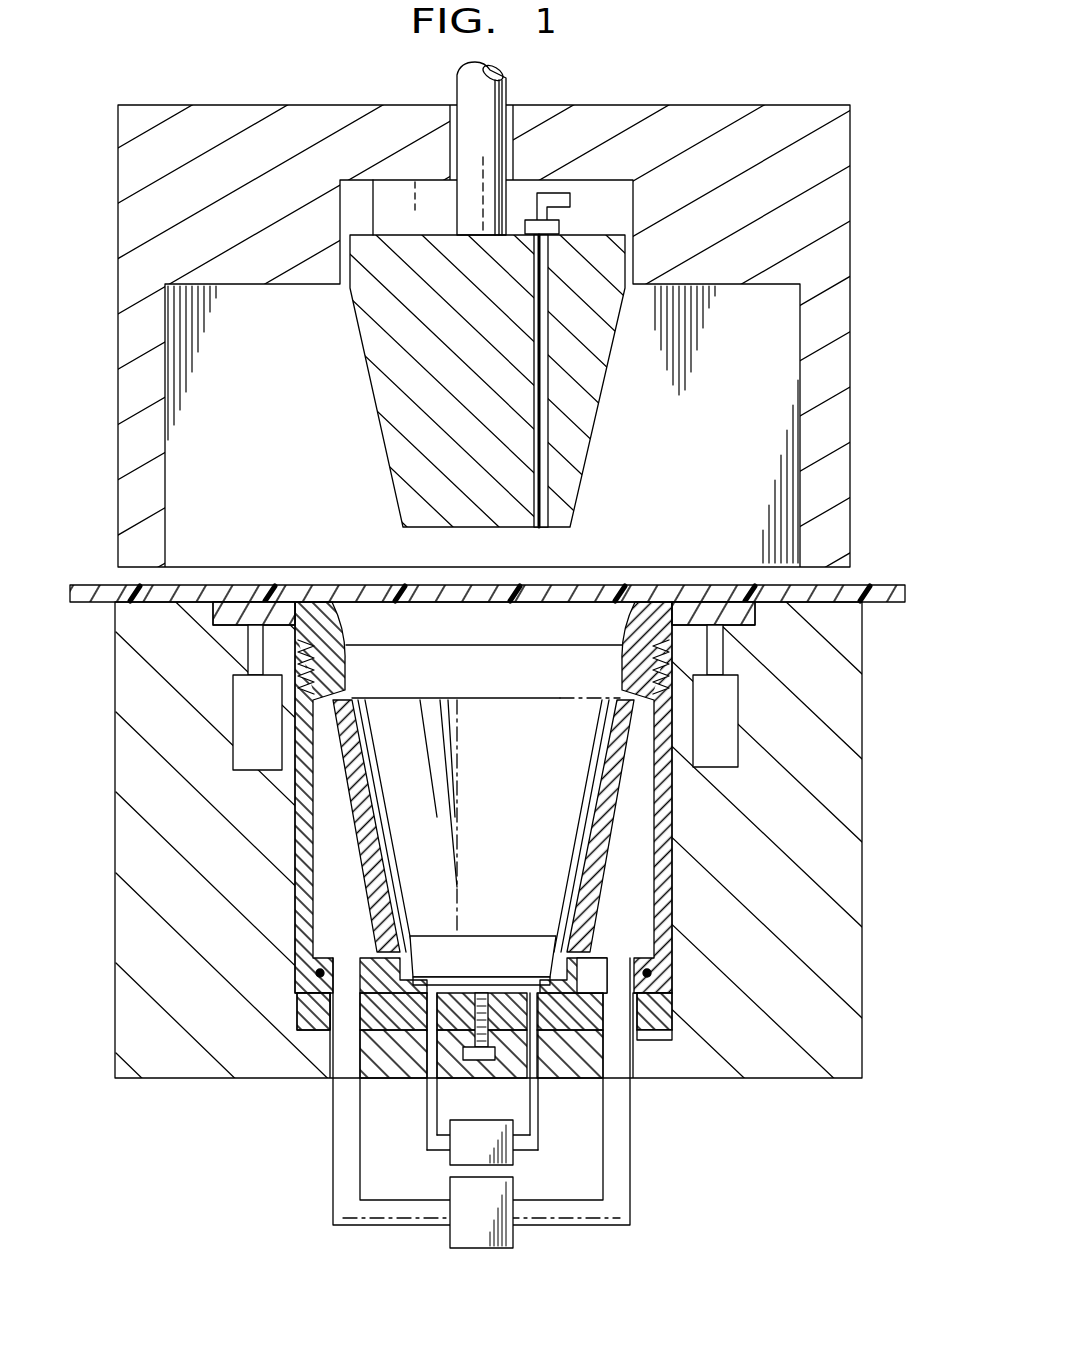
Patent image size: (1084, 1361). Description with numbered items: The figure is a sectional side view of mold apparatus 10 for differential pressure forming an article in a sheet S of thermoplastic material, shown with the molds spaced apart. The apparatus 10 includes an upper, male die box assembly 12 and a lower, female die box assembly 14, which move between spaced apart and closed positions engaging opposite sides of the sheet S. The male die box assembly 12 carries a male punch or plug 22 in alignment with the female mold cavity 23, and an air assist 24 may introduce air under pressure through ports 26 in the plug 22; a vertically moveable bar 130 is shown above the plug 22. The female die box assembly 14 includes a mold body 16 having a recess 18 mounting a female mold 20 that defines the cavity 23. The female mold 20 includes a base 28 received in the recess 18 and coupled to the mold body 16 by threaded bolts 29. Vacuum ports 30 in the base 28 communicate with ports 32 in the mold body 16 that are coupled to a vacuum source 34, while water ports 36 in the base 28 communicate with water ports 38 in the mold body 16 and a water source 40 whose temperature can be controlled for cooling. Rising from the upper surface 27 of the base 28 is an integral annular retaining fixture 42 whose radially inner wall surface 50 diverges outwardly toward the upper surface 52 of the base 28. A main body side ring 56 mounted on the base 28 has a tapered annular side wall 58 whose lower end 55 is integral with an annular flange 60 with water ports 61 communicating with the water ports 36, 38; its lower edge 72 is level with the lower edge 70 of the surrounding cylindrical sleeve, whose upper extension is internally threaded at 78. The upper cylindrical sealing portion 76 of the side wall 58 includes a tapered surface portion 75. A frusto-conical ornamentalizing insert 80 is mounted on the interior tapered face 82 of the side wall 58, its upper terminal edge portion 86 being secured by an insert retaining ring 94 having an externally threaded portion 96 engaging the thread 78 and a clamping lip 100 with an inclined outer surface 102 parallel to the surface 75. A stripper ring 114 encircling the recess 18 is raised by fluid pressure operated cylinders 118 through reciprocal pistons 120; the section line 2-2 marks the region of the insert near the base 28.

The apparatus 10 is at (165, 1105).
The upper male die box assembly 12 is at (248, 266).
The lower female die box assembly 14 is at (866, 644).
The mold body 16 is at (858, 810).
The recess 18 is at (312, 875).
The female mold 20 is at (680, 803).
The male punch or plug 22 is at (383, 433).
The female mold cavity 23 is at (410, 820).
The air assist 24 is at (560, 195).
The ports 26 is at (542, 442).
The upper surface of the base 27 is at (315, 974).
The base 28 is at (312, 1015).
The threaded bolts 29 is at (474, 1061).
The vacuum ports 30 is at (428, 1040).
The ports 32 is at (533, 1062).
The vacuum source 34 is at (513, 1158).
The water ports 36 is at (345, 1065).
The water ports 38 is at (343, 1087).
The water source 40 is at (513, 1232).
The annular retaining fixture 42 is at (414, 932).
The radially inner wall surface 50 is at (498, 936).
The upper surface of the base 52 is at (453, 977).
The lower end of side wall 55 is at (630, 982).
The main body side ring 56 is at (615, 925).
The tapered annular side wall 58 is at (622, 832).
The annular flange 60 is at (622, 962).
The water ports 61 is at (350, 965).
The lower edge of cylindrical sleeve 70 is at (650, 1000).
The lower edge of main body side ring 72 is at (650, 1030).
The tapered surface portion 75 is at (628, 712).
The upper cylindrical sealing portion 76 is at (678, 665).
The internal thread 78 is at (338, 648).
The ornamentalizing insert 80 is at (352, 772).
The interior tapered face 82 is at (592, 806).
The upper terminal edge portion of insert 86 is at (358, 704).
The insert retaining ring 94 is at (324, 601).
The externally threaded portion 96 is at (664, 658).
The insert retaining clamping lip 100 is at (628, 622).
The inclined outer surface 102 is at (622, 700).
The stripper ring 114 is at (240, 601).
The fluid pressure operated cylinders 118 is at (233, 735).
The reciprocal pistons 120 is at (248, 652).
The vertically moveable bar 130 is at (470, 92).
The sheet of thermoplastic material S is at (90, 603).
The section line 2-2 is at (561, 948).